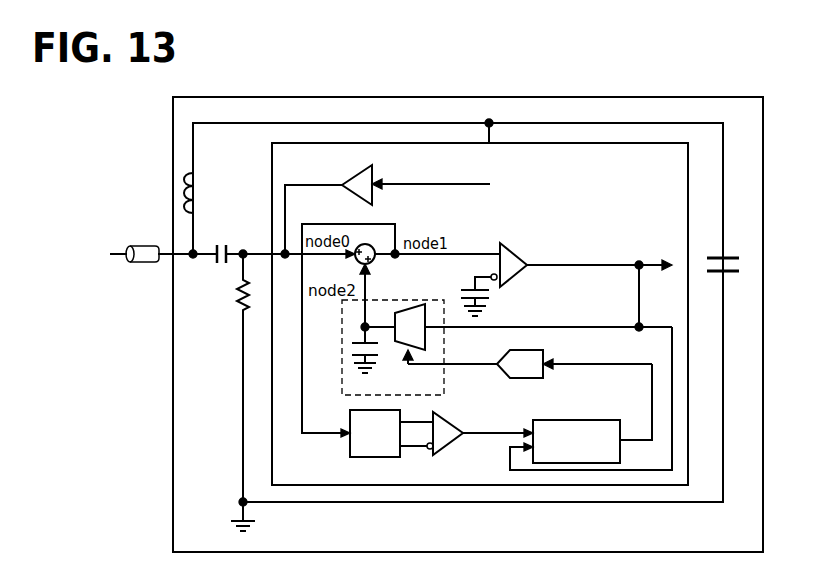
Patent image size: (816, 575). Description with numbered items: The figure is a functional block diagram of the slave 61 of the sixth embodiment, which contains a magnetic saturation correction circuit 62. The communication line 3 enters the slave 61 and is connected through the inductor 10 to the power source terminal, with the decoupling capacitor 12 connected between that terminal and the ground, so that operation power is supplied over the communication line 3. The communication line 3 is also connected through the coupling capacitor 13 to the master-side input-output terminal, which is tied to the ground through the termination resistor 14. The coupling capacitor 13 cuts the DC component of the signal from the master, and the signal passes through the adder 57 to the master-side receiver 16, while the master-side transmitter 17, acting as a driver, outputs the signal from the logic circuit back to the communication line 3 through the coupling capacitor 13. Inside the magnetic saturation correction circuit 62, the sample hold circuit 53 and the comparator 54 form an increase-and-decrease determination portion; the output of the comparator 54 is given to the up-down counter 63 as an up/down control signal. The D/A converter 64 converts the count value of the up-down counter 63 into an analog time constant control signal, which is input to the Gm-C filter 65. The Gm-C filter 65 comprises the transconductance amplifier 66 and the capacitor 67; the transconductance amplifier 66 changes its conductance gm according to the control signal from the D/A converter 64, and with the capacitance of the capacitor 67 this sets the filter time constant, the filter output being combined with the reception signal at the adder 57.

The communication line 3 is at (131, 246).
The inductor 10 is at (201, 195).
The decoupling capacitor 12 is at (720, 257).
The coupling capacitor 13 is at (220, 243).
The termination resistor 14 is at (238, 295).
The master-side receiver 16 is at (512, 247).
The master-side transmitter 17 is at (342, 182).
The sample hold circuit 53 is at (350, 450).
The comparator 54 is at (452, 448).
The adder 57 is at (375, 262).
The slave 61 is at (632, 97).
The magnetic saturation correction circuit 62 is at (461, 222).
The up-down counter 63 is at (568, 420).
The D/A converter 64 is at (525, 350).
The Gm-C filter 65 is at (342, 338).
The transconductance amplifier 66 is at (425, 338).
The capacitor 67 is at (352, 348).